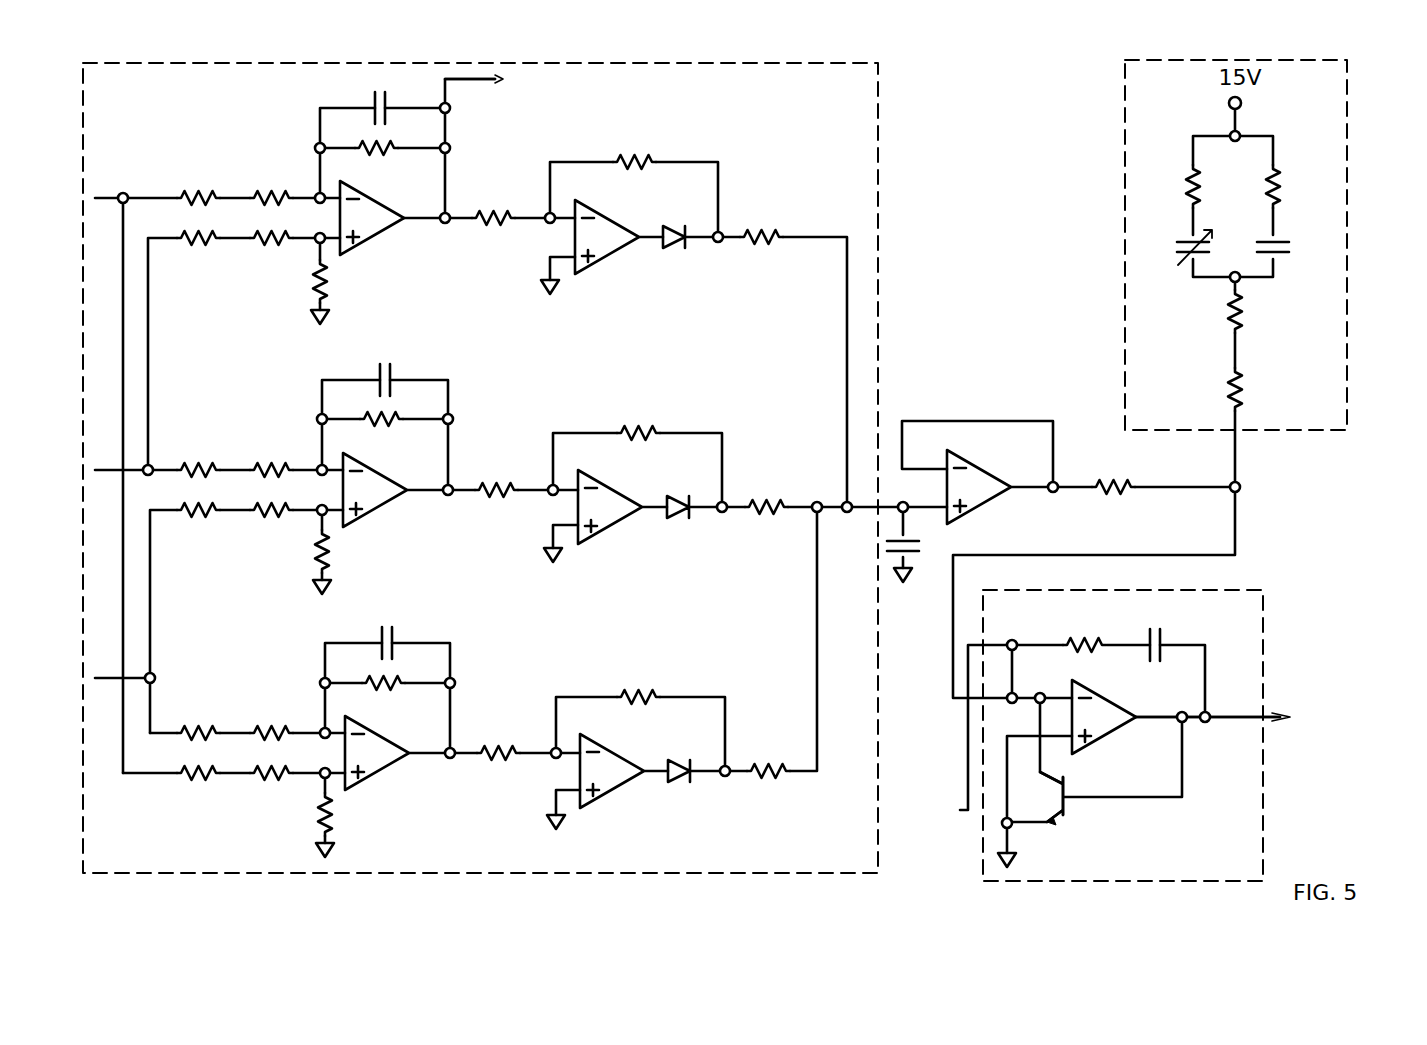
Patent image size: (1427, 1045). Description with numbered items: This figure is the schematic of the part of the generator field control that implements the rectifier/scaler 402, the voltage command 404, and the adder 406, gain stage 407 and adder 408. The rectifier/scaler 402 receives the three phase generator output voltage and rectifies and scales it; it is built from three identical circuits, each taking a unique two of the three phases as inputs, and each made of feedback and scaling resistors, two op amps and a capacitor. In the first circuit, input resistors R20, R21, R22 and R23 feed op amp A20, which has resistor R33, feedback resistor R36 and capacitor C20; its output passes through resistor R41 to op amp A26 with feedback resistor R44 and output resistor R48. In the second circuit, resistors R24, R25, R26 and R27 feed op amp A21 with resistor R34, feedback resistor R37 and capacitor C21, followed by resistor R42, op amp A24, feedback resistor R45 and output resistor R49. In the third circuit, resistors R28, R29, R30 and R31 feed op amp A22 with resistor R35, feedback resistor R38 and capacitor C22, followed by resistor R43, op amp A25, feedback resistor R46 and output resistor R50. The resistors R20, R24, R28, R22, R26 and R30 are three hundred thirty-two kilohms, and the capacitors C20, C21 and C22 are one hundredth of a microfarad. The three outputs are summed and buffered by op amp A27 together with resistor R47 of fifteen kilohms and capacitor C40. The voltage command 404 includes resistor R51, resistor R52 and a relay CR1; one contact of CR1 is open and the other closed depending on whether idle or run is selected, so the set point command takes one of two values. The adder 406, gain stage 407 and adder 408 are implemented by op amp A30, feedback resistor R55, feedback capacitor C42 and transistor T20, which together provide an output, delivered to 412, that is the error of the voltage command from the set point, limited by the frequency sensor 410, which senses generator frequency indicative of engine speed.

The rectifier/scaler 402 is at (878, 262).
The voltage command 404 is at (1125, 247).
The adder 406 is at (1263, 660).
The gain stage 407 is at (1121, 692).
The adder 408 is at (1065, 819).
The frequency sensor 410 is at (944, 842).
The output connection 412 is at (1334, 746).
The resistor R20 is at (199, 185).
The resistor R21 is at (272, 185).
The resistor R22 is at (199, 256).
The resistor R23 is at (272, 256).
The resistor R24 is at (199, 457).
The resistor R25 is at (272, 457).
The resistor R26 is at (199, 528).
The resistor R27 is at (274, 528).
The resistor R28 is at (199, 721).
The resistor R29 is at (274, 721).
The resistor R30 is at (203, 789).
The resistor R31 is at (276, 789).
The resistor R33 is at (345, 292).
The resistor R34 is at (348, 562).
The resistor R35 is at (350, 825).
The resistor R36 is at (380, 163).
The resistor R37 is at (384, 434).
The resistor R38 is at (386, 698).
The resistor R41 is at (493, 204).
The resistor R42 is at (495, 476).
The resistor R43 is at (498, 739).
The resistor R44 is at (633, 149).
The resistor R45 is at (635, 421).
The resistor R46 is at (636, 684).
The resistor R47 is at (1116, 473).
The resistor R48 is at (762, 224).
The resistor R49 is at (767, 493).
The resistor R50 is at (767, 757).
The resistor R51 is at (1297, 186).
The resistor R52 is at (1169, 186).
The feedback resistor R55 is at (1083, 631).
The capacitor C20 is at (382, 95).
The capacitor C21 is at (384, 367).
The capacitor C22 is at (387, 630).
The capacitor C40 is at (928, 555).
The feedback capacitor C42 is at (1159, 630).
The op amp A20 is at (392, 233).
The op amp A21 is at (387, 505).
The op amp A22 is at (392, 768).
The op amp A24 is at (610, 530).
The op amp A25 is at (628, 785).
The op amp A26 is at (607, 215).
The op amp A27 is at (1000, 495).
The op amp A30 is at (1103, 742).
The transistor T20 is at (1070, 812).
The relay CR1 is at (1237, 249).